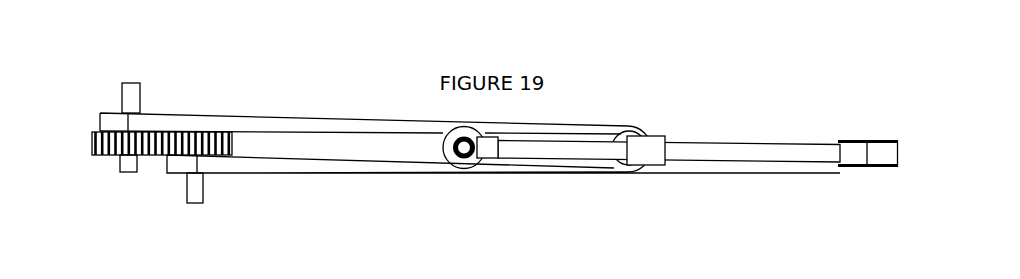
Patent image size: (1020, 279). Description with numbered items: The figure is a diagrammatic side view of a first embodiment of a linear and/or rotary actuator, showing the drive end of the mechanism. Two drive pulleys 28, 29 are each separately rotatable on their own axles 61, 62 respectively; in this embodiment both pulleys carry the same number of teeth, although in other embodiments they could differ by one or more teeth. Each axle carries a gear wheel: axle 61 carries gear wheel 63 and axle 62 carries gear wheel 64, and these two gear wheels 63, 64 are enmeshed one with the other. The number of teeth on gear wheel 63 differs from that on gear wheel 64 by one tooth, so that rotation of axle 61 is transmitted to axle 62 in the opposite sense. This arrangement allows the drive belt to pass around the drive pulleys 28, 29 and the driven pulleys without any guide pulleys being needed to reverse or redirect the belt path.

The drive pulley 28 is at (157, 113).
The drive pulley 29 is at (168, 174).
The axle 61 is at (137, 83).
The axle 62 is at (207, 207).
The gear wheel 63 is at (90, 157).
The gear wheel 64 is at (233, 145).